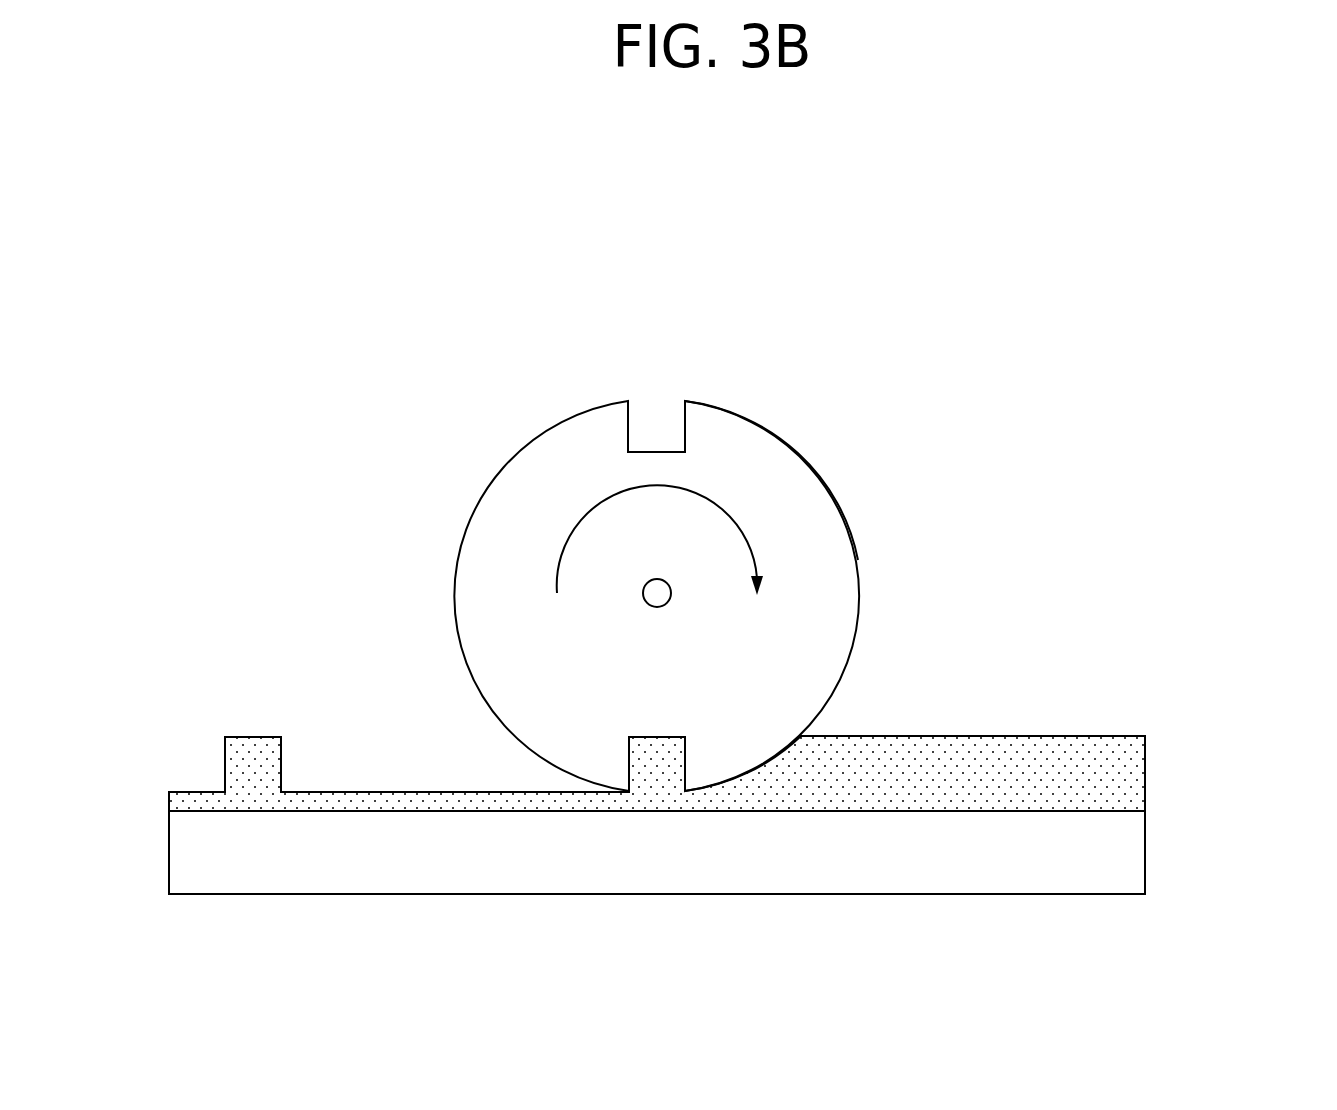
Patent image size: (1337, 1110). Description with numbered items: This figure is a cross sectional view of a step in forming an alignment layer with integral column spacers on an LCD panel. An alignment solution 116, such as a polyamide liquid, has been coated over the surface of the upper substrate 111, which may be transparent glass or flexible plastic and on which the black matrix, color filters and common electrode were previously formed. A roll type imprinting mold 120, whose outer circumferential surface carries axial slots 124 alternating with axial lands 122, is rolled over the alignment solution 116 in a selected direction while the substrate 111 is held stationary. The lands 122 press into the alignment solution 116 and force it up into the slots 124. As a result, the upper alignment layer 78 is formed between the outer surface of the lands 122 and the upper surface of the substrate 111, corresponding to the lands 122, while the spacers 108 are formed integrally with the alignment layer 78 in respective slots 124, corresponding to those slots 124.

The upper alignment layer 78 is at (200, 798).
The spacers 108 is at (253, 740).
The upper substrate 111 is at (1138, 858).
The alignment solution 116 is at (1138, 772).
The roll type imprinting mold 120 is at (871, 566).
The axial lands 122 is at (783, 453).
The axial slots 124 is at (668, 404).